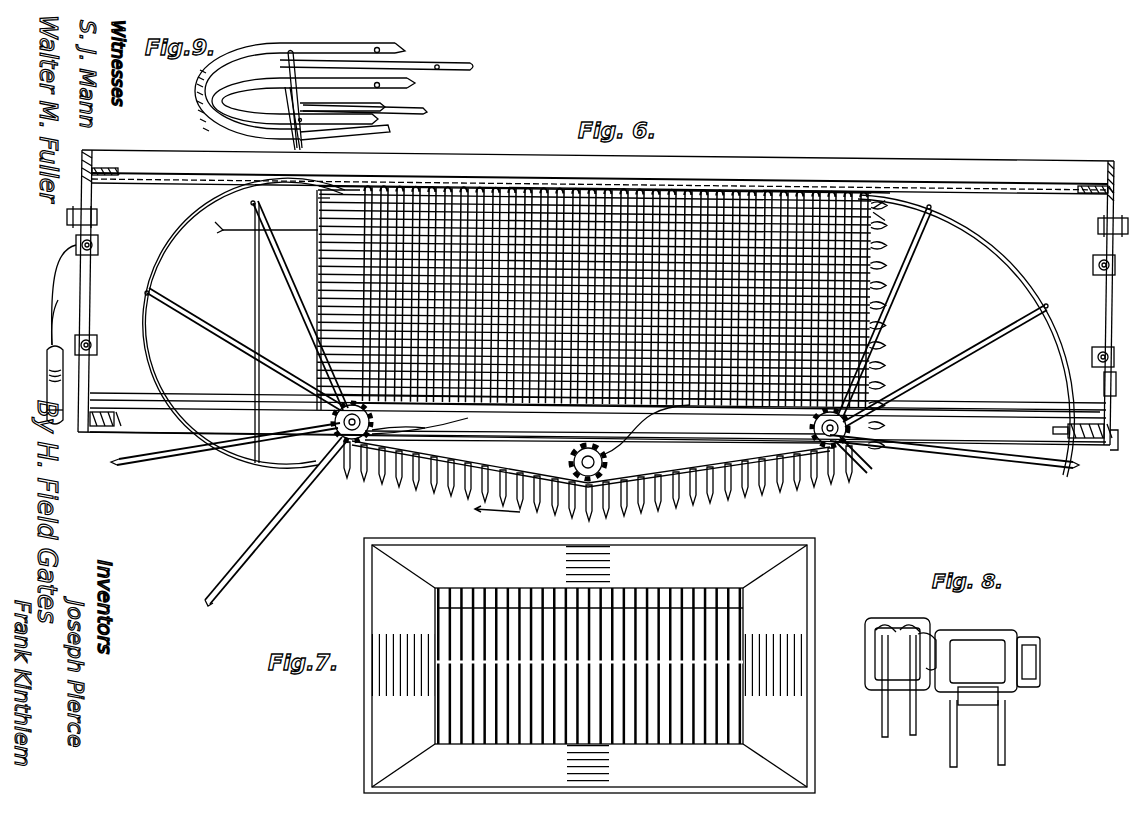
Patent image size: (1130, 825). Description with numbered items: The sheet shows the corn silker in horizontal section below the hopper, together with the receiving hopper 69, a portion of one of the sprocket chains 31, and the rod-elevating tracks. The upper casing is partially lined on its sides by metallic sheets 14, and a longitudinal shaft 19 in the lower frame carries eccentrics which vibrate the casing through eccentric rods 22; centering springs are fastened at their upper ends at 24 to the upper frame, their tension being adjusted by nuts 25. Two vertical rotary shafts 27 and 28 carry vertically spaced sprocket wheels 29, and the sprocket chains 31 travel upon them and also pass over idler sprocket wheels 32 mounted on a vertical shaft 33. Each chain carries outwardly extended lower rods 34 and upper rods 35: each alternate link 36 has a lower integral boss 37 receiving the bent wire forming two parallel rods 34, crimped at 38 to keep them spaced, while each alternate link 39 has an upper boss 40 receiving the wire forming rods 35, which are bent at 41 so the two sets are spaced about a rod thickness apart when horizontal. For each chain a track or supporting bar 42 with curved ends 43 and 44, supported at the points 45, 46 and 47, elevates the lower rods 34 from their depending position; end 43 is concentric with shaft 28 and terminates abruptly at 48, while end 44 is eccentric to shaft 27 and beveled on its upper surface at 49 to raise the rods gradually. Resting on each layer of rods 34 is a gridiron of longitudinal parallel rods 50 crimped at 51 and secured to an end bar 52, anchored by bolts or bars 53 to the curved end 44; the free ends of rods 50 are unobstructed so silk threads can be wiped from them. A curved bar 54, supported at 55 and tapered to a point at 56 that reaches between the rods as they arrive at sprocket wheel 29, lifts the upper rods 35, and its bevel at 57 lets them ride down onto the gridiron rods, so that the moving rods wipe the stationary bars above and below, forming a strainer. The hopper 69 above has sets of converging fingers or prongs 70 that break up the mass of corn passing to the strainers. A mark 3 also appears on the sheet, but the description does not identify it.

In FIG. 6, the spoke 3 is at (862, 476).
In FIG. 6, the metallic sheets 14 is at (993, 190).
In FIG. 6, the shaft 19 is at (1009, 402).
In FIG. 6, the eccentric rods 22 is at (47, 308).
In FIG. 6, the spring fastening point 24 is at (92, 252).
In FIG. 6, the nuts 25 is at (98, 245).
In FIG. 6, the vertical rotary shaft 27 is at (369, 470).
In FIG. 6, the vertical rotary shaft 28 is at (812, 428).
In FIG. 6, the sprocket wheels 29 is at (395, 449).
In FIG. 6, the sprocket chains 31 is at (705, 478).
In FIG. 6, the idler sprocket wheels 32 is at (606, 460).
In FIG. 6, the vertical shaft 33 is at (572, 461).
In FIG. 6, the lower rods 34 is at (512, 192).
In FIG. 8, the lower rods 34 is at (1000, 768).
In FIG. 6, the upper rods 35 is at (436, 192).
In FIG. 8, the upper rods 35 is at (910, 735).
In FIG. 8, the alternate link 36 is at (988, 636).
In FIG. 8, the lower integral boss 37 is at (976, 692).
In FIG. 6, the crimp 38 is at (835, 192).
In FIG. 8, the alternate link 39 is at (855, 651).
In FIG. 8, the upper boss 40 is at (890, 630).
In FIG. 8, the bend 41 is at (938, 634).
In FIG. 9, the track or supporting bar 42 is at (462, 62).
In FIG. 6, the track or supporting bar 42 is at (700, 190).
In FIG. 6, the curved end 43 is at (1010, 260).
In FIG. 9, the curved end 44 is at (386, 128).
In FIG. 6, the curved end 44 is at (412, 428).
In FIG. 6, the support point 45 is at (398, 190).
In FIG. 6, the support point 46 is at (1085, 450).
In FIG. 6, the support 47 is at (466, 408).
In FIG. 6, the abrupt termination 48 is at (1067, 470).
In FIG. 9, the bevel 49 is at (400, 110).
In FIG. 6, the longitudinal parallel rods 50 is at (868, 262).
In FIG. 6, the crimp 51 is at (868, 212).
In FIG. 6, the end bar 52 is at (316, 244).
In FIG. 6, the bolts or bars 53 is at (242, 233).
In FIG. 9, the curved bar 54 is at (250, 55).
In FIG. 9, the support 55 is at (390, 50).
In FIG. 6, the support 55 is at (340, 186).
In FIG. 9, the tapered point 56 is at (365, 112).
In FIG. 6, the tapered point 56 is at (342, 478).
In FIG. 9, the bevel 57 is at (404, 52).
In FIG. 6, the bevel 57 is at (330, 190).
In FIG. 7, the hopper 69 is at (768, 553).
In FIG. 7, the converging fingers or prongs 70 is at (650, 622).